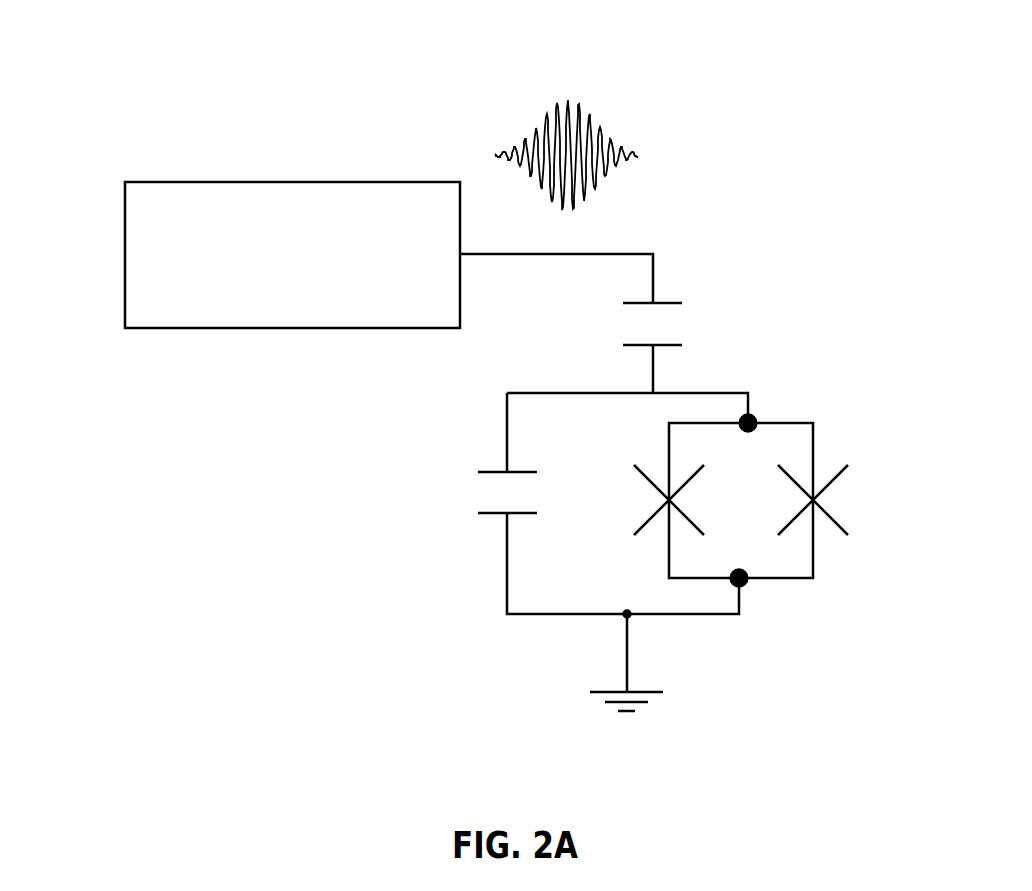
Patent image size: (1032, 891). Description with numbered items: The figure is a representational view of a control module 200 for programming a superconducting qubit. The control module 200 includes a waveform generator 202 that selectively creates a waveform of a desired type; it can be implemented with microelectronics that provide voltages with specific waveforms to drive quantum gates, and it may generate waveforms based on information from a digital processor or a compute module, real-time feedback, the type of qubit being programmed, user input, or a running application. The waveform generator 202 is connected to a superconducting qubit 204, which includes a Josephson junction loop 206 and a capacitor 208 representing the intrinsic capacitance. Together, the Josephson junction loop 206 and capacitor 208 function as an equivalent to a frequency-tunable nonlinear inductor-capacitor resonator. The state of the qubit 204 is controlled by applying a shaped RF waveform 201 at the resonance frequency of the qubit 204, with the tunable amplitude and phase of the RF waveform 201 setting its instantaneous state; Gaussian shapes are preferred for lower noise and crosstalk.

The control module 200 is at (103, 76).
The RF waveform 201 is at (604, 131).
The waveform generator 202 is at (265, 331).
The superconducting qubit 204 is at (843, 336).
The Josephson junction loop 206 is at (840, 444).
The capacitor 208 is at (453, 484).